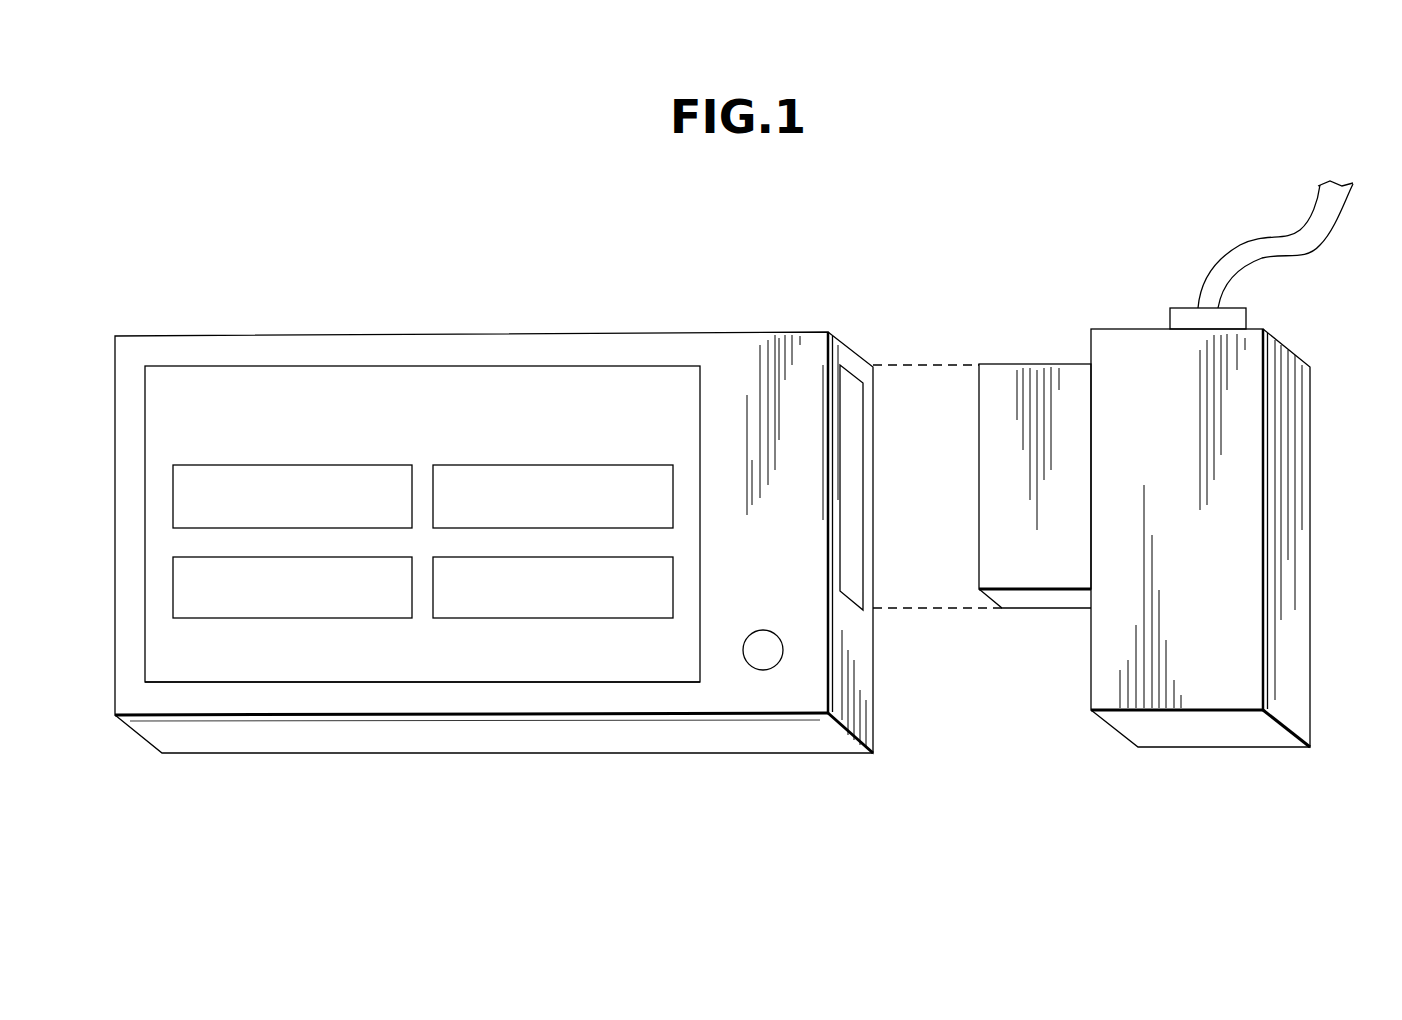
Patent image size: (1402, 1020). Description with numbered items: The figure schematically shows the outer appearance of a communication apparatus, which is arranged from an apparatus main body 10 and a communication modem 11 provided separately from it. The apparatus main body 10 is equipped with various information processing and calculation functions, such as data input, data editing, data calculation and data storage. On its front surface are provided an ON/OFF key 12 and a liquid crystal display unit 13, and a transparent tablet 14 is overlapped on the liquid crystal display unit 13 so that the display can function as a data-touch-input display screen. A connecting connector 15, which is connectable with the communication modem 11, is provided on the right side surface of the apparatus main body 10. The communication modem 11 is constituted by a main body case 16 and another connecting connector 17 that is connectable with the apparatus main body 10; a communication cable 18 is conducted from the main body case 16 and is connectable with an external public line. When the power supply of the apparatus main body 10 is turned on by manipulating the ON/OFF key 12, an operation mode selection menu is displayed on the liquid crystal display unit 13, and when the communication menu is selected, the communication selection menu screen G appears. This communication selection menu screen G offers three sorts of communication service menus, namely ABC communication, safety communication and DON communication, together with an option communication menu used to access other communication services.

The apparatus main body 10 is at (336, 330).
The communication selection menu screen G is at (586, 376).
The ON/OFF key 12 is at (765, 668).
The liquid crystal display unit 13 is at (252, 677).
The transparent tablet 14 is at (420, 677).
The connecting connector 15 is at (852, 364).
The communication modem 11 is at (1177, 462).
The main body case 16 is at (1255, 637).
The connecting connector 17 is at (1015, 580).
The communication cable 18 is at (1270, 237).